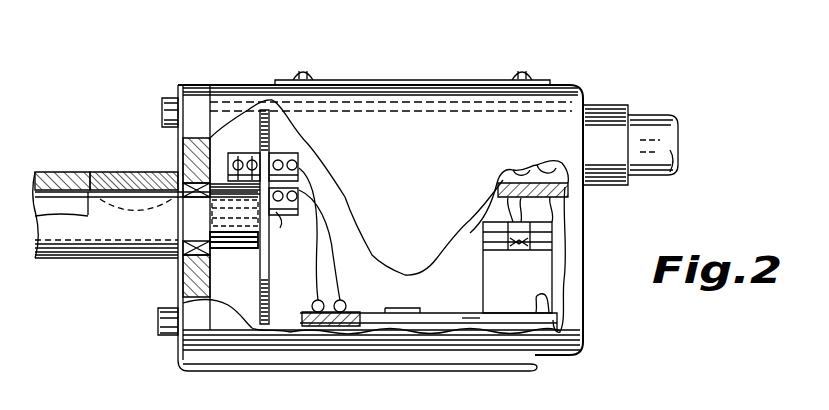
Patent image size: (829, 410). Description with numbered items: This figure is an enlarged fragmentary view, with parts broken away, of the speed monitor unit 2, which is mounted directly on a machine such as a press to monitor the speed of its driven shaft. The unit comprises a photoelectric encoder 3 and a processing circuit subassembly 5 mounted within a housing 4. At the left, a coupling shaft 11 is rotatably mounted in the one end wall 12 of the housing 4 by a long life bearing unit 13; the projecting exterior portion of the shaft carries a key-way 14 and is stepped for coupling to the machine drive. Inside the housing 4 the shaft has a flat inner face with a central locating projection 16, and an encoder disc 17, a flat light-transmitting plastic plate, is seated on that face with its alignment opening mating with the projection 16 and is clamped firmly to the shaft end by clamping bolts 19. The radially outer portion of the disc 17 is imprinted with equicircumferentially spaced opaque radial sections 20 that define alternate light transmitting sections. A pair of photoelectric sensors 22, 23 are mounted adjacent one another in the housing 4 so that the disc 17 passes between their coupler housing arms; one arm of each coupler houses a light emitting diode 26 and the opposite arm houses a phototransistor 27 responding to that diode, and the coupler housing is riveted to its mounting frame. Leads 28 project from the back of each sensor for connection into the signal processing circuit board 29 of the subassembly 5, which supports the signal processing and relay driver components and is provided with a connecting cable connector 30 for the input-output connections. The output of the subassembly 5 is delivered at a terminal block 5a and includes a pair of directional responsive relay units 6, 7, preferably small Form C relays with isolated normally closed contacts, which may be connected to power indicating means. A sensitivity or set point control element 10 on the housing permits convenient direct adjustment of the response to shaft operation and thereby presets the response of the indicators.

The speed monitor unit 2 is at (486, 74).
The photoelectric encoder 3 is at (251, 262).
The housing 4 is at (397, 95).
The processing circuit subassembly 5 is at (442, 332).
The terminal block 5a is at (572, 208).
The directional responsive relay unit 6 is at (544, 287).
The directional responsive relay unit 7 is at (547, 305).
The sensitivity or set point control element 10 is at (158, 336).
The coupling shaft 11 is at (102, 197).
The end wall 12 is at (185, 290).
The bearing unit 13 is at (186, 265).
The key-way 14 is at (136, 188).
The central locating projection 16 is at (242, 256).
The encoder disc 17 is at (273, 282).
The clamping bolts 19 is at (262, 213).
The opaque radial section 20 is at (296, 124).
The photoelectric sensor 22 is at (314, 240).
The photoelectric sensor 23 is at (305, 164).
The light emitting diode 26 is at (288, 229).
The phototransistor 27 is at (252, 162).
The leads 28 is at (338, 264).
The signal processing circuit board 29 is at (466, 318).
The connecting cable connector 30 is at (657, 124).